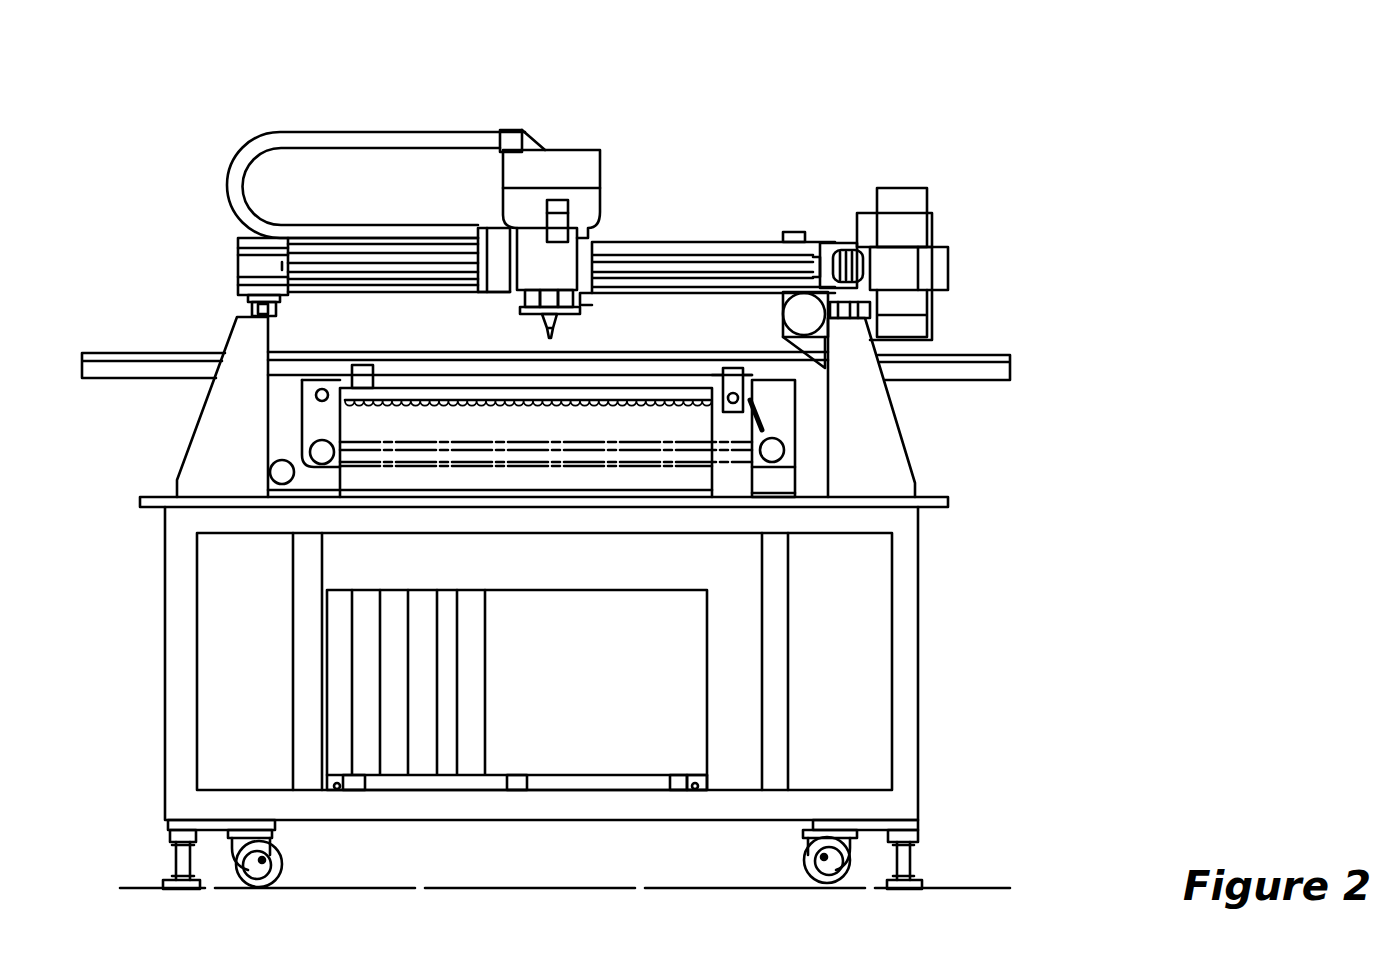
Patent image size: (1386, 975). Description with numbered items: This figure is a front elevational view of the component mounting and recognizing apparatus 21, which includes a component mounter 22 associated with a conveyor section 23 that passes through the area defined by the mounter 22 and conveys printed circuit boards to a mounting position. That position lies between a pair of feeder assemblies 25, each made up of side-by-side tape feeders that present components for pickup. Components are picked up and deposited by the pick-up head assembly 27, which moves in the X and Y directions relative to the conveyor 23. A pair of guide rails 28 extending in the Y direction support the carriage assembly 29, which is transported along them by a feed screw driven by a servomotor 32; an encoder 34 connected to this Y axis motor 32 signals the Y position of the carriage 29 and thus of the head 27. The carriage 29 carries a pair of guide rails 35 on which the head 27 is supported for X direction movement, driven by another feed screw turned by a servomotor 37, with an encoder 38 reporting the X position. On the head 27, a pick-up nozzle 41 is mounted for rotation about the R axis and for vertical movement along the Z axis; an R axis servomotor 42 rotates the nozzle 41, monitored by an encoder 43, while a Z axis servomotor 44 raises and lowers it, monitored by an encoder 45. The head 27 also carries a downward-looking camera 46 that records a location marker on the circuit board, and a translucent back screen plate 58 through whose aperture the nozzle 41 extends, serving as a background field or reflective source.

The component mounting and recognizing apparatus 21 is at (1017, 608).
The component mounter 22 is at (937, 495).
The conveyor section 23 is at (981, 353).
The feeder assembly 25 is at (716, 468).
The pick-up head assembly 27 is at (612, 150).
The guide rail 28 is at (242, 312).
The carriage assembly 29 is at (678, 238).
The servomotor 32 is at (762, 330).
The encoder 34 is at (793, 315).
The guide rail 35 is at (355, 262).
The servomotor 37 is at (895, 253).
The encoder 38 is at (942, 247).
The pick-up nozzle 41 is at (557, 327).
The R axis servomotor 42 is at (559, 156).
The encoder 43 is at (557, 205).
The Z axis servomotor 44 is at (498, 232).
The encoder 45 is at (487, 253).
The camera 46 is at (588, 298).
The back screen plate 58 is at (533, 312).